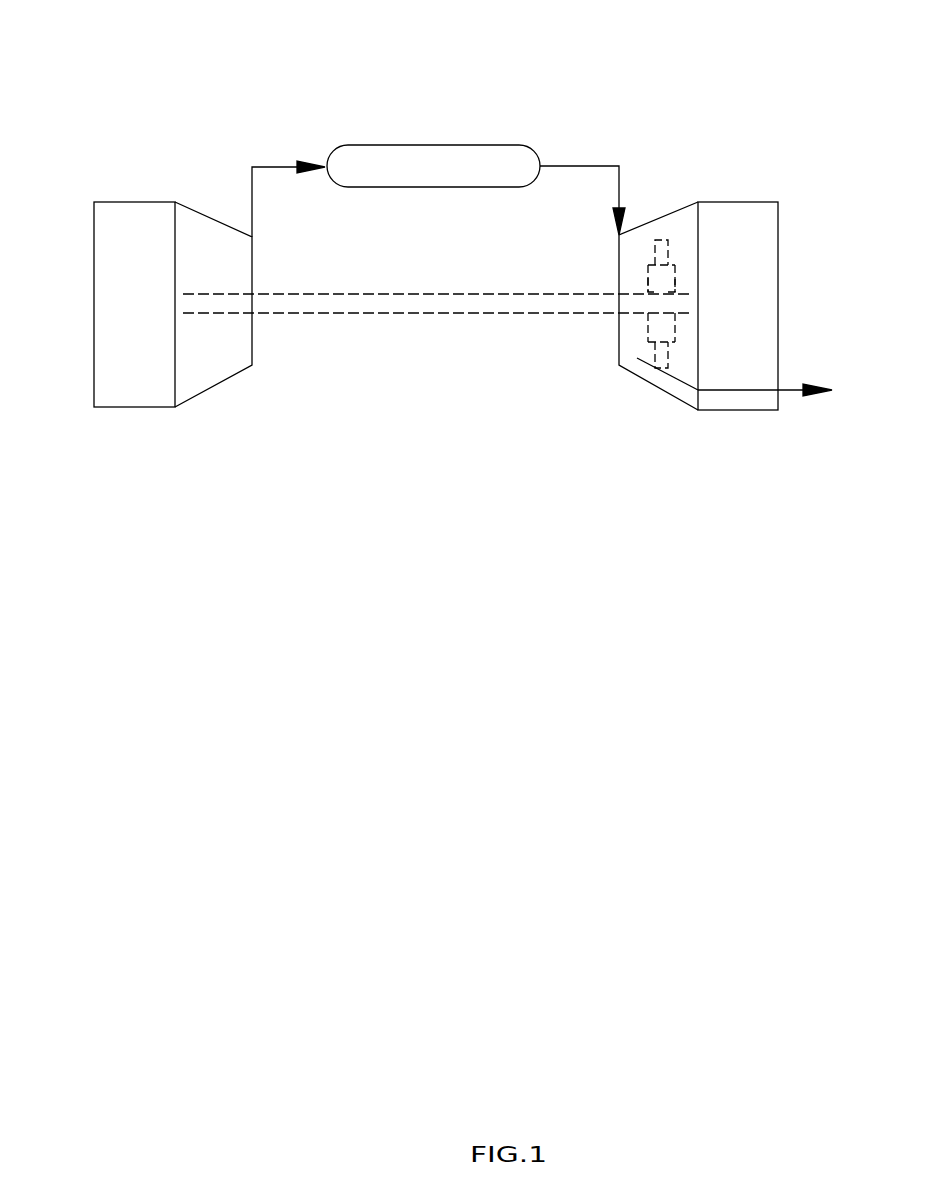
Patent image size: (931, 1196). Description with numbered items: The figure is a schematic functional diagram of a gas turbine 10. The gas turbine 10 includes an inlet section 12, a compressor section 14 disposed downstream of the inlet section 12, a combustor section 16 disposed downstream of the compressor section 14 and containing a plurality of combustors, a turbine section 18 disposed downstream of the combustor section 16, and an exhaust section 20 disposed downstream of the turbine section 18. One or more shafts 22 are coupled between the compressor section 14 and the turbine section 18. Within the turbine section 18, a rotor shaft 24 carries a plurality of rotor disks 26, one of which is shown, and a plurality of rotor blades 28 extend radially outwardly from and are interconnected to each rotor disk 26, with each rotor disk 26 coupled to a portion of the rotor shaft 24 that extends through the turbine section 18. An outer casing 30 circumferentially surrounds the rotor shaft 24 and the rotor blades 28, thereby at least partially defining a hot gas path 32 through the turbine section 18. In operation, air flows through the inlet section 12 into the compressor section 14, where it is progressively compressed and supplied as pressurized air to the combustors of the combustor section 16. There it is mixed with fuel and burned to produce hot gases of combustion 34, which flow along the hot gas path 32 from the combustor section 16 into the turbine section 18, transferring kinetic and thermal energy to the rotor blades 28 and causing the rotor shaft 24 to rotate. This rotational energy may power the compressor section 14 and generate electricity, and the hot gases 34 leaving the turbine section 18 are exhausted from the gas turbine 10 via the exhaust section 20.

The gas turbine 10 is at (297, 83).
The inlet section 12 is at (107, 202).
The compressor section 14 is at (202, 212).
The combustor section 16 is at (482, 147).
The turbine section 18 is at (687, 205).
The exhaust section 20 is at (745, 200).
The shaft 22 is at (402, 313).
The rotor shaft 24 is at (677, 292).
The rotor disk 26 is at (650, 282).
The rotor blade 28 is at (657, 240).
The outer casing 30 is at (675, 395).
The hot gas path 32 is at (672, 378).
The hot gases of combustion 34 is at (590, 168).